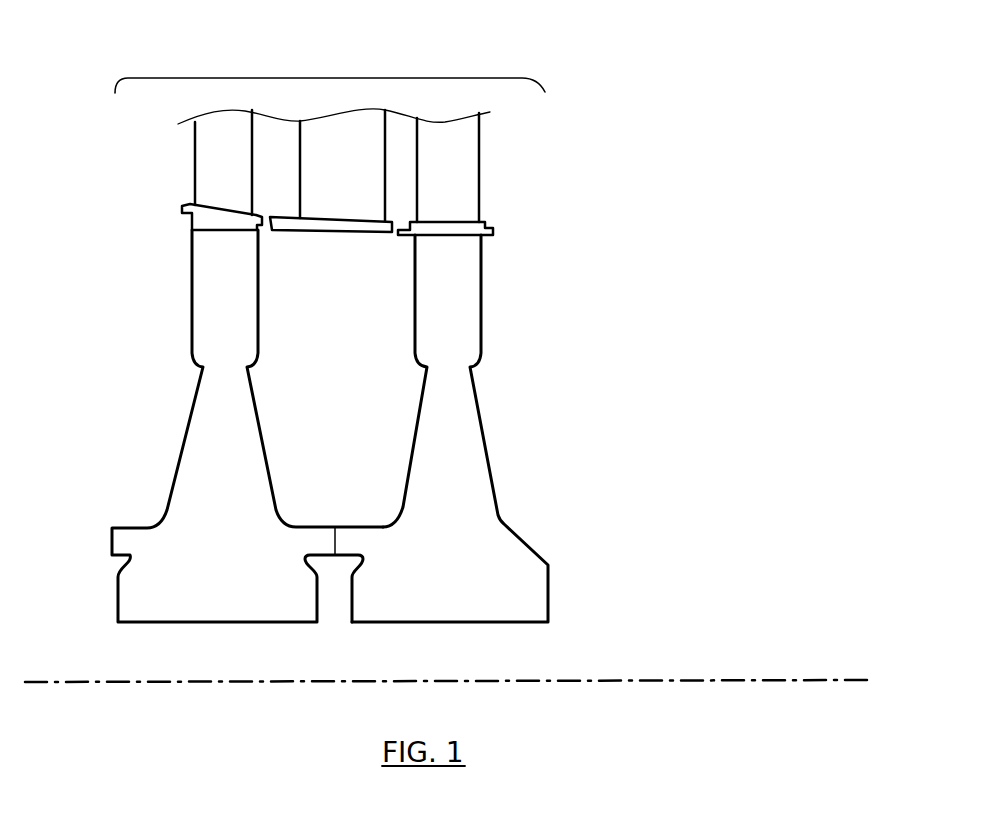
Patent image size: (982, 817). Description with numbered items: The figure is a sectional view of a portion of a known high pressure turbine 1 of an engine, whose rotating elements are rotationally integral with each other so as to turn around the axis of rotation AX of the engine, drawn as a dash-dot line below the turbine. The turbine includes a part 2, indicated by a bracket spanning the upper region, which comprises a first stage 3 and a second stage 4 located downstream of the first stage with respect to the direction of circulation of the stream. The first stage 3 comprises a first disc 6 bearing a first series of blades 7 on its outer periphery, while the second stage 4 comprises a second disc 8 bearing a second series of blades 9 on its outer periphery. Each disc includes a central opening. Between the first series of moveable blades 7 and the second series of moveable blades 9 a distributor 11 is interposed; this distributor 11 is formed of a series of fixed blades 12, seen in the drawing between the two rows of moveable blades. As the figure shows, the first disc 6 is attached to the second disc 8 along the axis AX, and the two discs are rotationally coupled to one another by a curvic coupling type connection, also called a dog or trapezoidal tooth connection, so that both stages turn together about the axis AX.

The high pressure turbine 1 is at (662, 349).
The part 2 is at (313, 77).
The first stage 3 is at (126, 193).
The second stage 4 is at (534, 193).
The first disc 6 is at (247, 426).
The first series of blades 7 is at (222, 170).
The second disc 8 is at (450, 428).
The second series of blades 9 is at (445, 174).
The distributor 11 is at (341, 264).
The fixed blades 12 is at (342, 165).
The axis of rotation AX is at (688, 680).